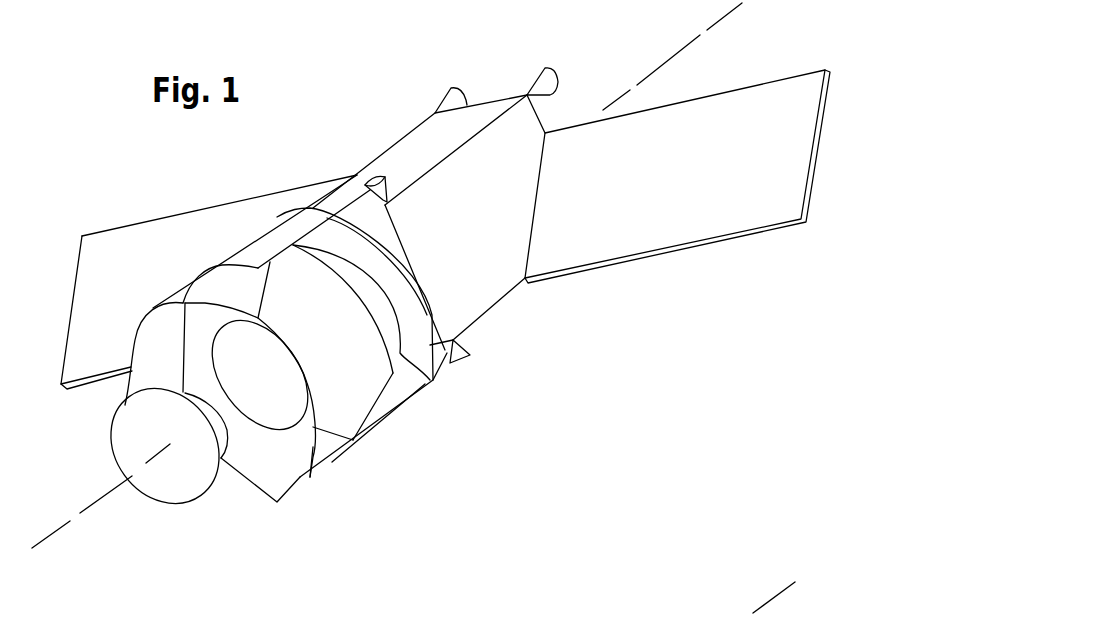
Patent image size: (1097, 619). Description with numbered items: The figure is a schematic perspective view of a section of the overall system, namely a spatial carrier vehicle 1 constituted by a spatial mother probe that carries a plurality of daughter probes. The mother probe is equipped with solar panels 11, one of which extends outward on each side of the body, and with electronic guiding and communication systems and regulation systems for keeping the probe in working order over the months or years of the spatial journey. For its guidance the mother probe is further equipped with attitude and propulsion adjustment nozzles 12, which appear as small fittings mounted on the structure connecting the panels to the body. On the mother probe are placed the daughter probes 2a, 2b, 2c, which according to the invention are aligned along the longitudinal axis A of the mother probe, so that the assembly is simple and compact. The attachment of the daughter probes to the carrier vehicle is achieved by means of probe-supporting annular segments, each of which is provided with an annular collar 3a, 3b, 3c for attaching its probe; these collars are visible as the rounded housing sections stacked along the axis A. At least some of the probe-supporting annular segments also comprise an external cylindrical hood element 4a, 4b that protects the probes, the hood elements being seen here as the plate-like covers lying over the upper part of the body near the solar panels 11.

The spatial carrier vehicle 1 is at (484, 291).
The daughter probe 2a is at (365, 392).
The daughter probe 2b is at (291, 465).
The daughter probe 2c is at (180, 485).
The annular collar 3a is at (414, 374).
The annular collar 3b is at (330, 448).
The annular collar 3c is at (240, 488).
The external cylindrical hood element 4a is at (274, 236).
The external cylindrical hood element 4b is at (185, 300).
The solar panels 11 is at (697, 208).
The attitude and propulsion adjustment nozzles 12 is at (547, 78).
The longitudinal axis A is at (70, 521).